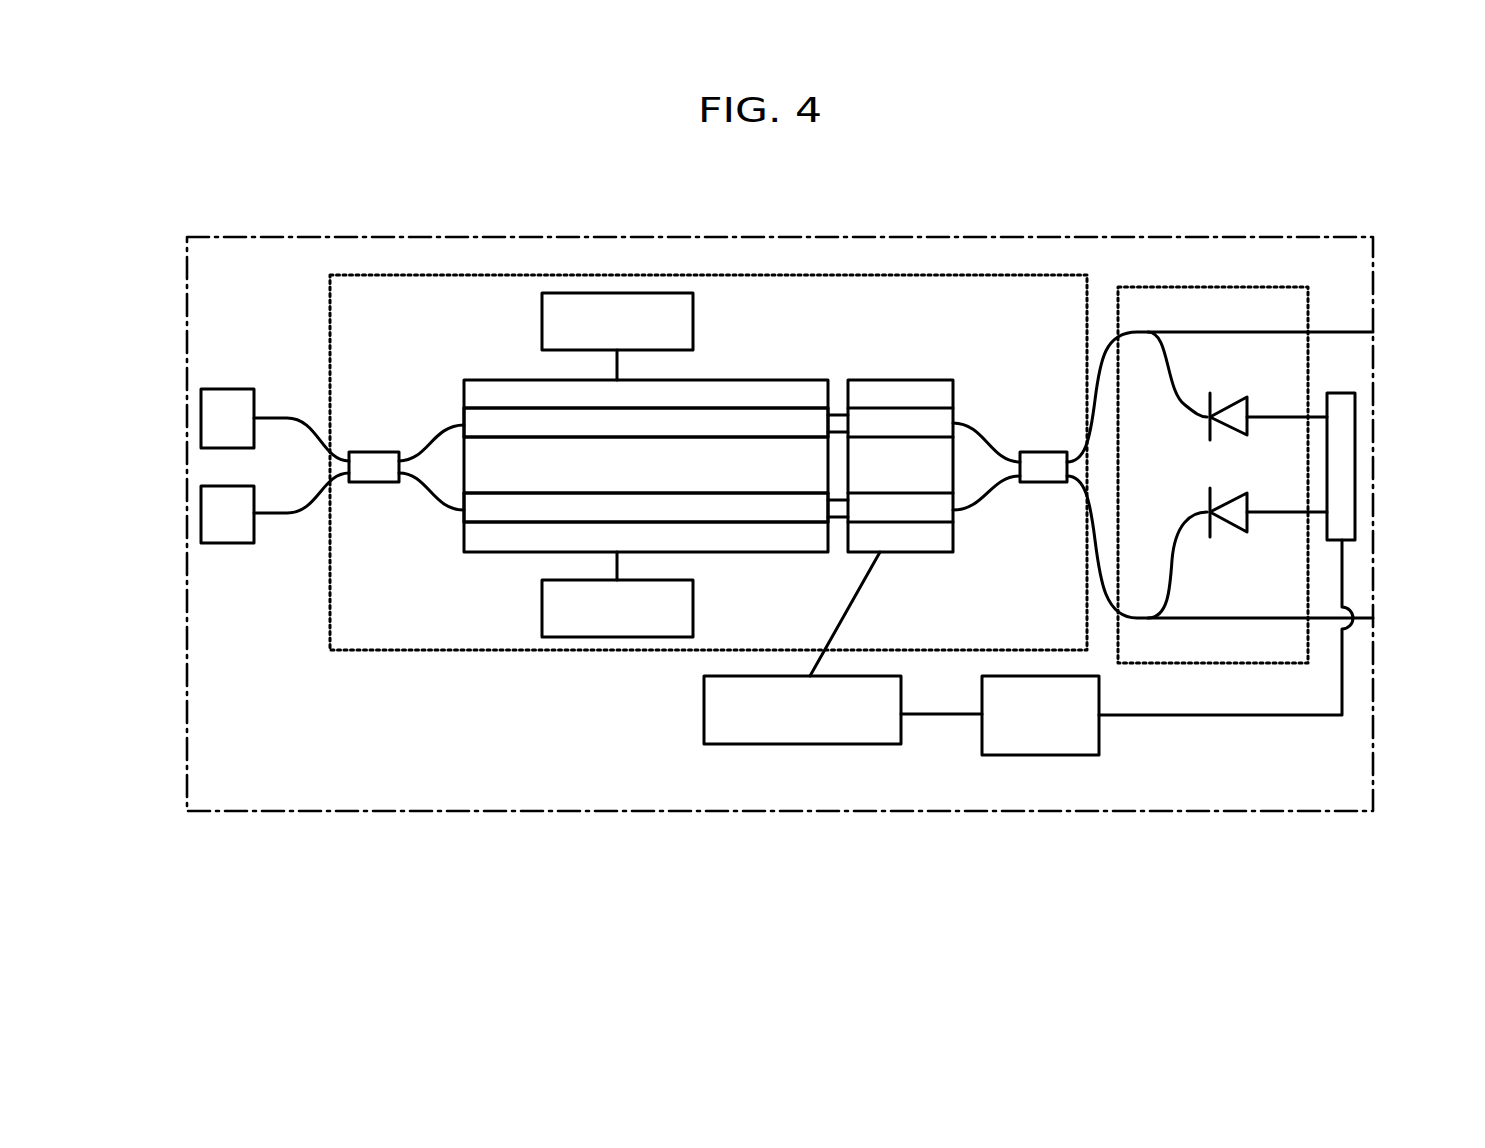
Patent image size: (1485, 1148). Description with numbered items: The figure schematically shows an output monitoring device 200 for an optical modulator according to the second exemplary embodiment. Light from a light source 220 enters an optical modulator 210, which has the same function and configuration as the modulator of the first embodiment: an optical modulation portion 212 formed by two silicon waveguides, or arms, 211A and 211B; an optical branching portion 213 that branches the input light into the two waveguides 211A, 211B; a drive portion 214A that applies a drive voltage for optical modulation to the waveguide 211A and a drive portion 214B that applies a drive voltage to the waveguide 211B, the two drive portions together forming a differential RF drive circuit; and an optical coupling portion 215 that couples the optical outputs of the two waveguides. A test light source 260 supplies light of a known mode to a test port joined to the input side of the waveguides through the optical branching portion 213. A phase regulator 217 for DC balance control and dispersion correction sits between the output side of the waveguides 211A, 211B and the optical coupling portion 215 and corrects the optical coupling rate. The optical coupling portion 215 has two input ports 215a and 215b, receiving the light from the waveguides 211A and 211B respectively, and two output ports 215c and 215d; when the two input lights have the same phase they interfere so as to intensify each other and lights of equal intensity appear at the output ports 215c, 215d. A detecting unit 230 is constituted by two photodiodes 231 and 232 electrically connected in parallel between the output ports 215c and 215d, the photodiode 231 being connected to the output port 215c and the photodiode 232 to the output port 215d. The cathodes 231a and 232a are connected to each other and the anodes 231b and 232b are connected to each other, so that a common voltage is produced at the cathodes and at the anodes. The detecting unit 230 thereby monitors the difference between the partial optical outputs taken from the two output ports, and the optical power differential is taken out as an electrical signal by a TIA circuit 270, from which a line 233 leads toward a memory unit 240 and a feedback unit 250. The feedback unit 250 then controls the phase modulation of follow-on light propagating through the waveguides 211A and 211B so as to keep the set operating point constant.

The output monitoring device 200 is at (1214, 230).
The optical modulator 210 is at (885, 270).
The waveguide 211A is at (712, 420).
The waveguide 211B is at (511, 512).
The modulation section 212 is at (765, 363).
The optical coupler (input) 213 is at (373, 452).
The first electrode 214A is at (636, 308).
The second electrode 214B is at (607, 612).
The optical coupling portion 215 is at (1047, 452).
The first input waveguide of coupler 215a is at (988, 438).
The second input waveguide of coupler 215b is at (1003, 490).
The output port 215c is at (1103, 358).
The output port 215d is at (1099, 632).
The phase adjustment section 217 is at (912, 365).
The light source 220 is at (234, 398).
The detecting unit 230 is at (1314, 283).
The photodiode 231 is at (1224, 442).
The cathode 231a is at (1193, 403).
The anode 231b is at (1258, 401).
The photodiode 232 is at (1226, 482).
The cathode 232a is at (1193, 538).
The anode 232b is at (1259, 530).
The signal line 233 is at (1272, 715).
The memory unit 240 is at (1020, 725).
The feedback unit 250 is at (788, 718).
The test light source 260 is at (236, 528).
The TIA circuit 270 is at (1345, 472).